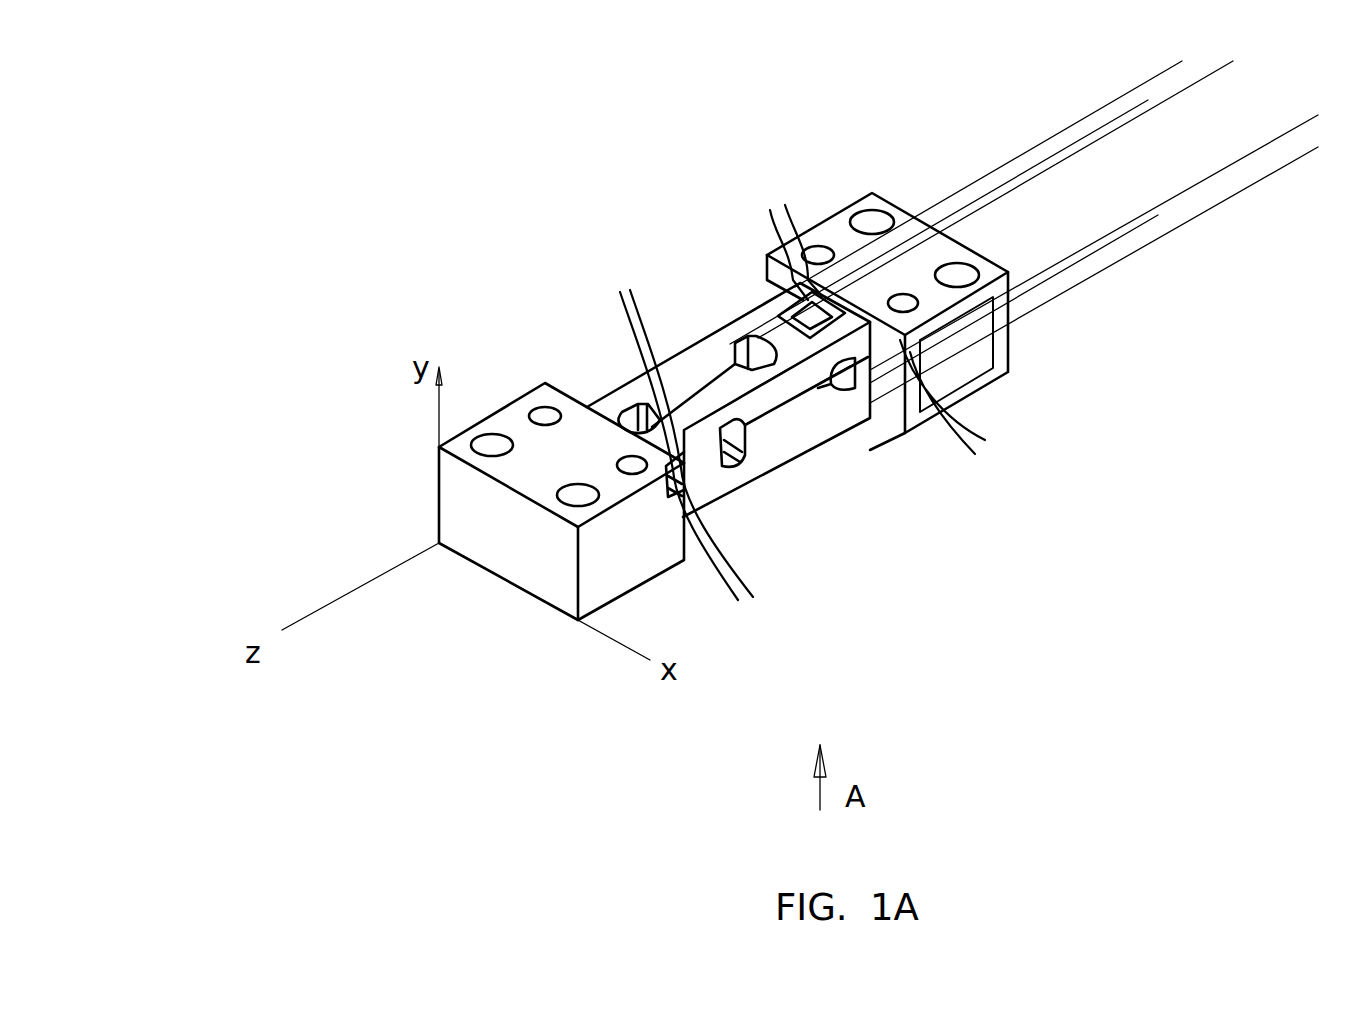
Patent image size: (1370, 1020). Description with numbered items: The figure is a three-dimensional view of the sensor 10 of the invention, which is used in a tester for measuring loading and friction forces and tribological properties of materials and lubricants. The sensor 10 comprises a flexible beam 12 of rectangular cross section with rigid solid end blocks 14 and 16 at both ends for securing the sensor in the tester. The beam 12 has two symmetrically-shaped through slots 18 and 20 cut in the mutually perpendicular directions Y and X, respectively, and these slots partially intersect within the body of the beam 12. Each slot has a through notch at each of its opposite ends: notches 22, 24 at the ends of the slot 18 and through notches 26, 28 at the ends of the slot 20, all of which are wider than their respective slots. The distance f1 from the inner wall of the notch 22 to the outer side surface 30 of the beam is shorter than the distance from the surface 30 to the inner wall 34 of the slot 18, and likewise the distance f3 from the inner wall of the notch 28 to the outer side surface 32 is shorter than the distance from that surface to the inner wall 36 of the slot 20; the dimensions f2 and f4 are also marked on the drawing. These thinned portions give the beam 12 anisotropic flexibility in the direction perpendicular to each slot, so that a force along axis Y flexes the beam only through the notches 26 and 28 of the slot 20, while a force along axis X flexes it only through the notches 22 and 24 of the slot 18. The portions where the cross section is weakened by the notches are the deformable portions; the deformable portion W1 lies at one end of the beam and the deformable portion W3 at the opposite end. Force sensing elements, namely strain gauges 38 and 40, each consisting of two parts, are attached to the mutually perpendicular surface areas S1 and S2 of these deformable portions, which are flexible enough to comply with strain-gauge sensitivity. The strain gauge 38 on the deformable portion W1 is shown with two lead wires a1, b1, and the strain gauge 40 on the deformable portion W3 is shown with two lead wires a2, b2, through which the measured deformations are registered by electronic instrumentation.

The sensor 10 is at (871, 384).
The flexible beam 12 is at (657, 257).
The end block 14 is at (528, 387).
The end block 16 is at (808, 229).
The through slot 18 is at (683, 377).
The through slot 20 is at (860, 520).
The notch 22 is at (742, 345).
The notch 24 is at (627, 410).
The through notch 26 is at (864, 407).
The through notch 28 is at (761, 471).
The outer side surface 30 is at (710, 327).
The outer side surface 32 is at (845, 398).
The inner wall 34 is at (710, 360).
The inner wall 36 is at (780, 413).
The strain gauge 38 is at (798, 194).
The strain gauge 40 is at (678, 503).
The deformable portion W1 is at (852, 323).
The deformable portion W3 is at (708, 488).
The surface area S1 is at (891, 536).
The surface area S2 is at (733, 462).
The lead wire a1 is at (786, 233).
The lead wire a2 is at (623, 366).
The lead wire b1 is at (960, 411).
The lead wire b2 is at (713, 554).
The distance f1 is at (1180, 127).
The fiber cladding dimension f2 is at (1262, 88).
The distance f3 is at (1132, 157).
The fiber cladding dimension f4 is at (1292, 55).